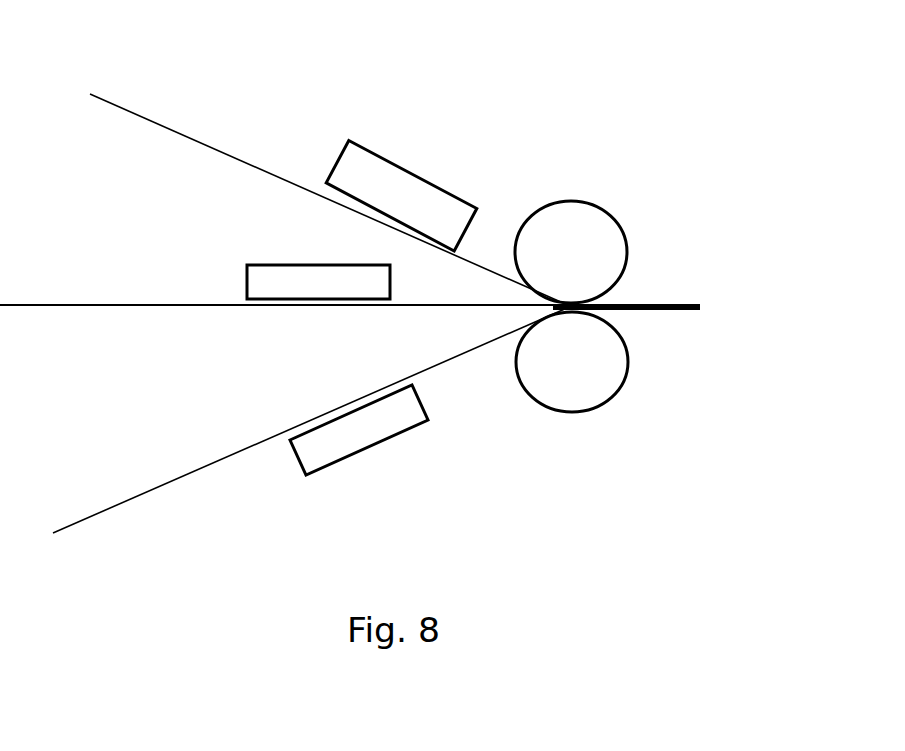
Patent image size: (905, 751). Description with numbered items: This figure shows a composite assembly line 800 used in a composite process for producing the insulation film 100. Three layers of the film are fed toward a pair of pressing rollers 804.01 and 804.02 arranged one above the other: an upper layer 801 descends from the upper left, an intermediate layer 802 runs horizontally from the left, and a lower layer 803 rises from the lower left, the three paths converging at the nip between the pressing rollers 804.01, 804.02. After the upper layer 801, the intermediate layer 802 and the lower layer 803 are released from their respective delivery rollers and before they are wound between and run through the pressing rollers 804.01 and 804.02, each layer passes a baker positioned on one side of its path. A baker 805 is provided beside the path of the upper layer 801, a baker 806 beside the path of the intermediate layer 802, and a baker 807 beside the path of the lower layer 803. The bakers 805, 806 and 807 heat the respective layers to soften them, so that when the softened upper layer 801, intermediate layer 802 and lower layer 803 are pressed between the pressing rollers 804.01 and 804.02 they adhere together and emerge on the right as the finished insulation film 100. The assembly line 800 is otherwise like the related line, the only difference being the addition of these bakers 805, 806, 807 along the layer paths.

The composite assembly line 800 is at (593, 63).
The upper layer 801 is at (165, 128).
The intermediate layer 802 is at (67, 307).
The lower layer 803 is at (78, 528).
The pressing roller 804.01 is at (642, 252).
The pressing roller 804.02 is at (637, 372).
The baker 805 is at (433, 175).
The baker 806 is at (290, 258).
The baker 807 is at (362, 460).
The insulation film 100 is at (688, 302).